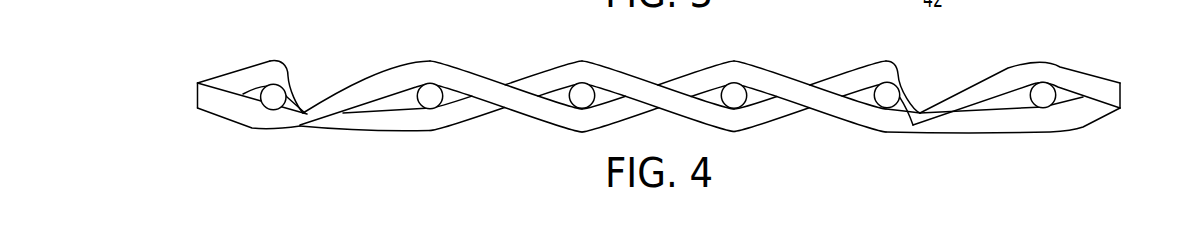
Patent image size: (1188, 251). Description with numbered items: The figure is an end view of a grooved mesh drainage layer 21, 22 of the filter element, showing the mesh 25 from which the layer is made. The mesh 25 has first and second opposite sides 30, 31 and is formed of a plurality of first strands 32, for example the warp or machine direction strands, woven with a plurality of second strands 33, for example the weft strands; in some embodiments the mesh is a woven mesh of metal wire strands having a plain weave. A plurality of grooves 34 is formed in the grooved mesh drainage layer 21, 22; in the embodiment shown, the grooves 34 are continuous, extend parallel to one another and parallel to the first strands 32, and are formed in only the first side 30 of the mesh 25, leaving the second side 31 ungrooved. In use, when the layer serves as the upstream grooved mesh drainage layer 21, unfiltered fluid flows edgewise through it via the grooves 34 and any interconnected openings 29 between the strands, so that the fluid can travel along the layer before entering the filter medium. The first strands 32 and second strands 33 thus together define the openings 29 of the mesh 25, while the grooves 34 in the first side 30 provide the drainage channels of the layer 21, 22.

The upstream grooved mesh drainage layer 21 is at (795, 86).
The grooved mesh drainage layer 22 is at (710, 71).
The mesh 25 is at (572, 72).
The openings 29 is at (400, 102).
The first side 30 is at (737, 62).
The second side 31 is at (736, 131).
The first strands 32 is at (428, 92).
The second strands 33 is at (457, 82).
The grooves 34 is at (303, 112).